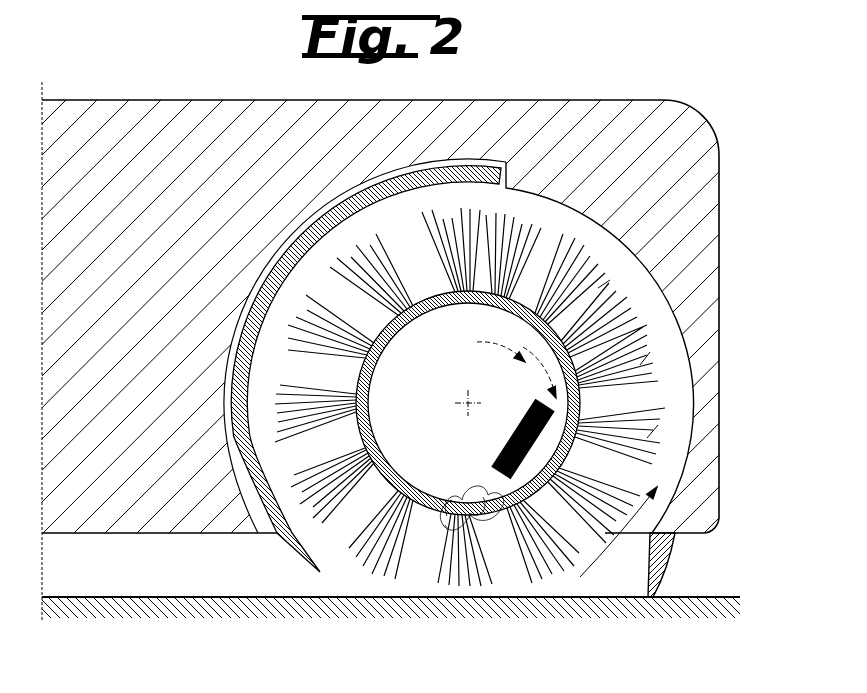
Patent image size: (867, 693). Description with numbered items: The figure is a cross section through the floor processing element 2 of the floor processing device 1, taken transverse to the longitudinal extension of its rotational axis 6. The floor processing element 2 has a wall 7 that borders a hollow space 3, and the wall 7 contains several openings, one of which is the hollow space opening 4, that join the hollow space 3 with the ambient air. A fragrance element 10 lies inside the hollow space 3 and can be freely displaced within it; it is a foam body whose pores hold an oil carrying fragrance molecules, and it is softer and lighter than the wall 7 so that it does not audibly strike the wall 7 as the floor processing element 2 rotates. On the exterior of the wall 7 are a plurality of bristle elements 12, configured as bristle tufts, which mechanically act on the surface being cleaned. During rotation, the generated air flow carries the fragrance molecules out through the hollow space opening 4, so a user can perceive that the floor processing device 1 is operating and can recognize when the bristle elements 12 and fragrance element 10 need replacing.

The floor processing device 1 is at (735, 148).
The floor processing element 2 is at (303, 533).
The hollow space 3 is at (475, 320).
The hollow space opening 4 is at (546, 314).
The rotational axis 6 is at (465, 400).
The wall 7 is at (366, 389).
The fragrance element 10 is at (512, 442).
The bristle elements 12 is at (647, 438).